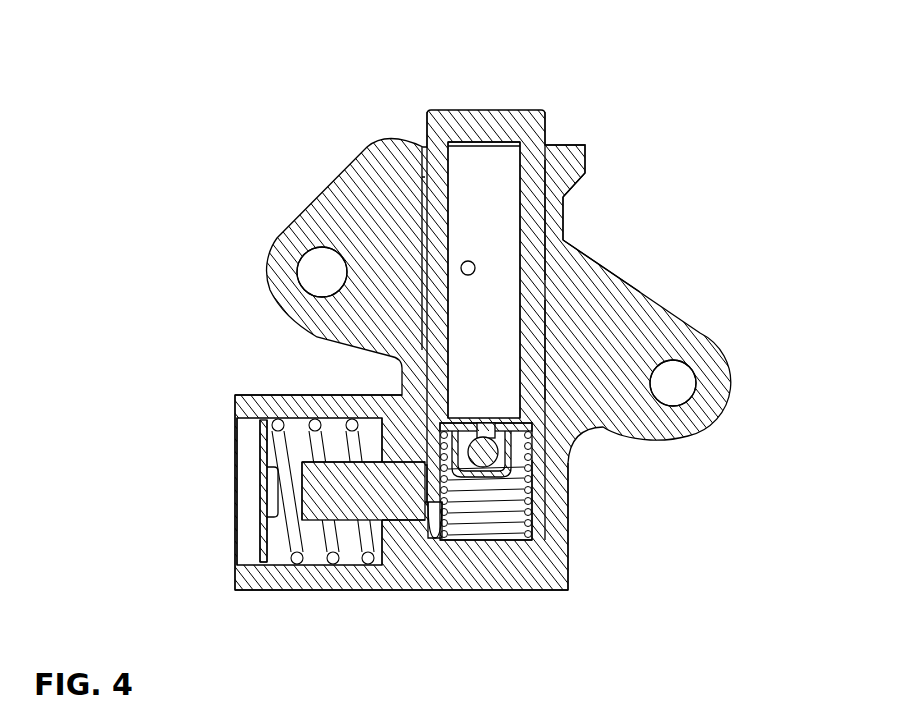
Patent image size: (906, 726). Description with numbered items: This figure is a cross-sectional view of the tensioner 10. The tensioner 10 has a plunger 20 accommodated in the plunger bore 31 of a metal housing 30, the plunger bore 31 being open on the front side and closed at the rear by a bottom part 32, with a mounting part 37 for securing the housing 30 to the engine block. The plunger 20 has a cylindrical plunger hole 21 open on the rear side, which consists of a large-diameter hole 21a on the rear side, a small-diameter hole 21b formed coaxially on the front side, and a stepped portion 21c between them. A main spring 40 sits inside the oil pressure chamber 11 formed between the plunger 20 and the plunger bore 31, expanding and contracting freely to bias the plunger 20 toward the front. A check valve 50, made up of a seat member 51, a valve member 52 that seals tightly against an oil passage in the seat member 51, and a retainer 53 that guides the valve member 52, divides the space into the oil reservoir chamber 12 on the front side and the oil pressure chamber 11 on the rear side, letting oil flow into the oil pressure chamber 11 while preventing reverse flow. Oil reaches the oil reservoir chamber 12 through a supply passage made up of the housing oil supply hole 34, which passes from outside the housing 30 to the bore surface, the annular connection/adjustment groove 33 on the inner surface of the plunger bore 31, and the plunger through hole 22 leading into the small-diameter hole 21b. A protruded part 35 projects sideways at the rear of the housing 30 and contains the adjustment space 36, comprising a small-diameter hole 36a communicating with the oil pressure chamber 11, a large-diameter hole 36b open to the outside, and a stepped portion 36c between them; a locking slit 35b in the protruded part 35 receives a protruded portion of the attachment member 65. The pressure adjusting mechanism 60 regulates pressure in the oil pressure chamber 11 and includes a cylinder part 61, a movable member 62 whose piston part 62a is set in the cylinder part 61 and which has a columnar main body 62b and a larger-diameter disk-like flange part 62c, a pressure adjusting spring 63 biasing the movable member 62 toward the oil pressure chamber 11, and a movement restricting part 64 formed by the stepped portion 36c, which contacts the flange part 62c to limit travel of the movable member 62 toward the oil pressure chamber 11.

The tensioner 10 is at (205, 112).
The oil pressure chamber 11 is at (475, 509).
The oil reservoir chamber 12 is at (475, 322).
The plunger 20 is at (496, 118).
The plunger hole 21 is at (565, 228).
The large-diameter hole 21a is at (568, 517).
The small-diameter hole 21b is at (535, 277).
The stepped portion 21c is at (547, 397).
The plunger through hole 22 is at (468, 261).
The housing 30 is at (380, 165).
The plunger bore 31 is at (550, 377).
The bottom part 32 is at (508, 570).
The connection/adjustment groove 33 is at (548, 193).
The housing oil supply hole 34 is at (420, 213).
The protruded part 35 is at (248, 573).
The locking slit 35b is at (272, 482).
The adjustment space 36 is at (330, 543).
The small-diameter hole 36a is at (358, 557).
The large-diameter hole 36b is at (312, 557).
The stepped portion 36c is at (400, 568).
The mounting part 37 is at (700, 350).
The main spring 40 is at (568, 553).
The check valve 50 is at (583, 474).
The seat member 51 is at (545, 428).
The valve member 52 is at (535, 483).
The retainer 53 is at (535, 455).
The pressure adjusting mechanism 60 is at (453, 383).
The cylinder part 61 is at (433, 540).
The movable member 62 is at (308, 475).
The piston part 62a is at (438, 553).
The main body 62b is at (350, 425).
The flange part 62c is at (298, 457).
The pressure adjusting spring 63 is at (275, 565).
The movement restricting part 64 is at (335, 482).
The attachment member 65 is at (262, 447).